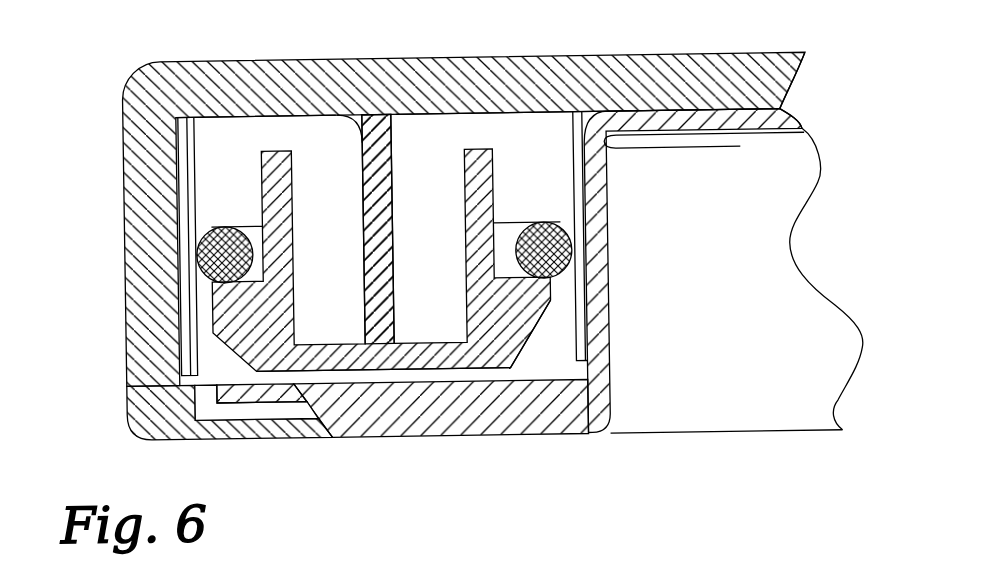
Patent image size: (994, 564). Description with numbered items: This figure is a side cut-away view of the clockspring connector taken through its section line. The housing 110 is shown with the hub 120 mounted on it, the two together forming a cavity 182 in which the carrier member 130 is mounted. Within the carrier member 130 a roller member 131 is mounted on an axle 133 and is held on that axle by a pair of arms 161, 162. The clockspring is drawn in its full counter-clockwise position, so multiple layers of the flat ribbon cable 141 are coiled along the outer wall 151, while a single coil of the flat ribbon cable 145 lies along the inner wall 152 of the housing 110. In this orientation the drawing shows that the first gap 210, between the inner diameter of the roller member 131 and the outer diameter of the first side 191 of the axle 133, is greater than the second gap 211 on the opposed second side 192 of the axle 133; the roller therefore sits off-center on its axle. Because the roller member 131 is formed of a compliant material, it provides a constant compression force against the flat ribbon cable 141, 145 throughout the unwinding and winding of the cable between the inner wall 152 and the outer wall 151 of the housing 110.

The housing 110 is at (152, 132).
The hub 120 is at (582, 413).
The carrier member 130 is at (341, 115).
The roller member 131 is at (215, 229).
The axle 133 is at (309, 362).
The flat ribbon cable 141 is at (185, 132).
The flat ribbon cable 145 is at (615, 193).
The outer wall 151 is at (334, 115).
The inner wall 152 is at (585, 359).
The arm 161 is at (215, 298).
The arm 162 is at (550, 311).
The cavity 182 is at (509, 135).
The first side 191 is at (744, 155).
The second side 192 is at (266, 184).
The first gap 210 is at (509, 237).
The second gap 211 is at (257, 250).